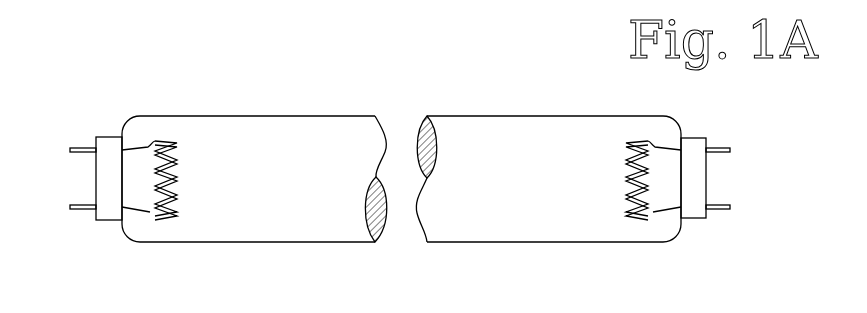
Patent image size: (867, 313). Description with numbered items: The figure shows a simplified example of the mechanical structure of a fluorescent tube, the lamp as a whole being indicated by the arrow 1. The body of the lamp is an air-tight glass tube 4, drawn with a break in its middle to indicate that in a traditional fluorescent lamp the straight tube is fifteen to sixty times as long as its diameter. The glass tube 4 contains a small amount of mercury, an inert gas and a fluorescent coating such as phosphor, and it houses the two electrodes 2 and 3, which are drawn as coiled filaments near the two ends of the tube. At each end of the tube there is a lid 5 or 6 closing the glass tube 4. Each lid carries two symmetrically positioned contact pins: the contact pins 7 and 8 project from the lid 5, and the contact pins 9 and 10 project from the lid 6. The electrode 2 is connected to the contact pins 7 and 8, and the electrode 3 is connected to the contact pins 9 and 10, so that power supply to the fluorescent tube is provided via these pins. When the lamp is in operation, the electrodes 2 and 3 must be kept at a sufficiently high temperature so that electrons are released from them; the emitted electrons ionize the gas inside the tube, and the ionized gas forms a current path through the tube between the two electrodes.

The lamp 1 is at (343, 95).
The electrode 2 is at (148, 214).
The electrode 3 is at (657, 214).
The glass tube 4 is at (187, 115).
The lid 5 is at (113, 137).
The lid 6 is at (697, 137).
The contact pin 7 is at (76, 148).
The contact pin 8 is at (85, 209).
The contact pin 9 is at (722, 148).
The contact pin 10 is at (722, 208).